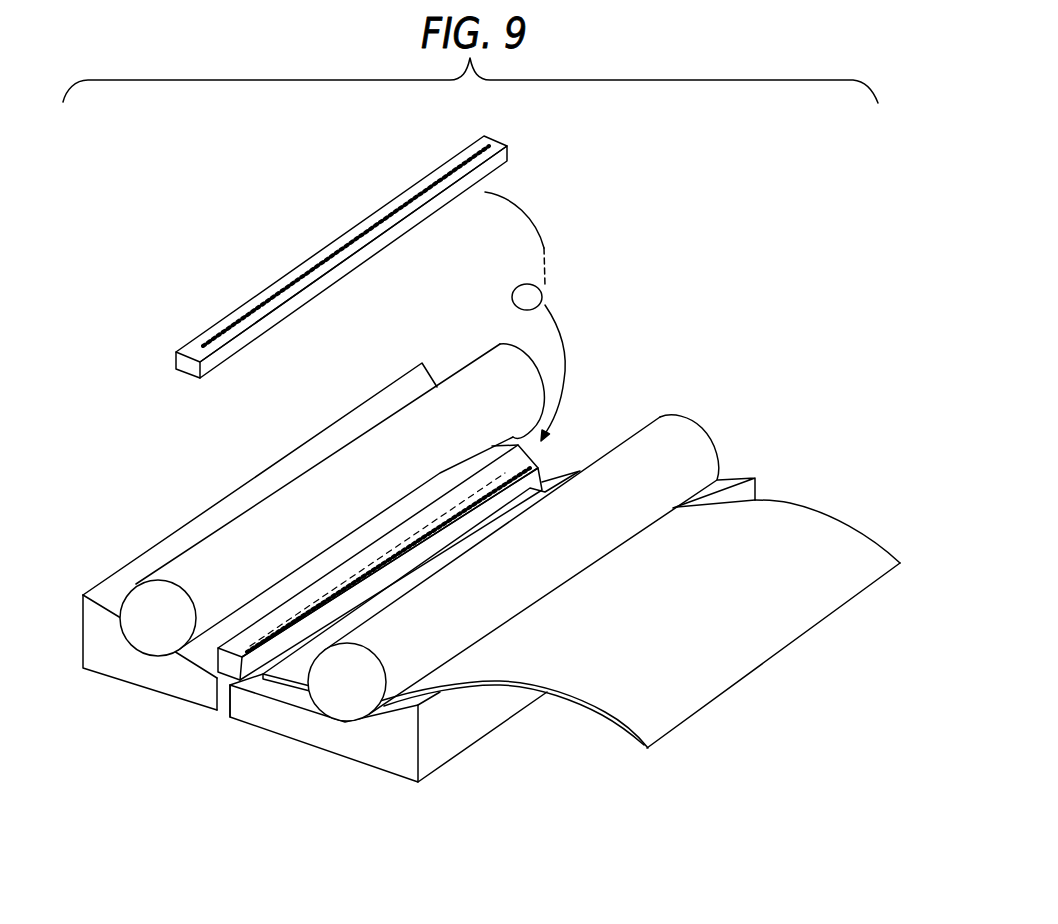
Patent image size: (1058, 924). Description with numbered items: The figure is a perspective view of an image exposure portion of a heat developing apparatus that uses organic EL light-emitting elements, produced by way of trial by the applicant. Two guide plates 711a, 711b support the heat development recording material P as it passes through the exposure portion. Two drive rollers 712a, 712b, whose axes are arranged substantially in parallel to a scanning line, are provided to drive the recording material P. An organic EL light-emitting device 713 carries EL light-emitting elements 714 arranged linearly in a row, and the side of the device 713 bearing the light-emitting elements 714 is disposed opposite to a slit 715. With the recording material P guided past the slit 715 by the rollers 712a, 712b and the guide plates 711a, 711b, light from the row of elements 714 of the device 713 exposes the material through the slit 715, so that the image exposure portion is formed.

The guide plate 711a is at (330, 740).
The guide plate 711b is at (133, 672).
The drive roller 712a is at (355, 697).
The drive roller 712b is at (261, 522).
The organic EL light-emitting device 713 is at (177, 378).
The EL light-emitting elements 714 is at (272, 293).
The slit 715 is at (222, 712).
The heat development recording material P is at (683, 683).